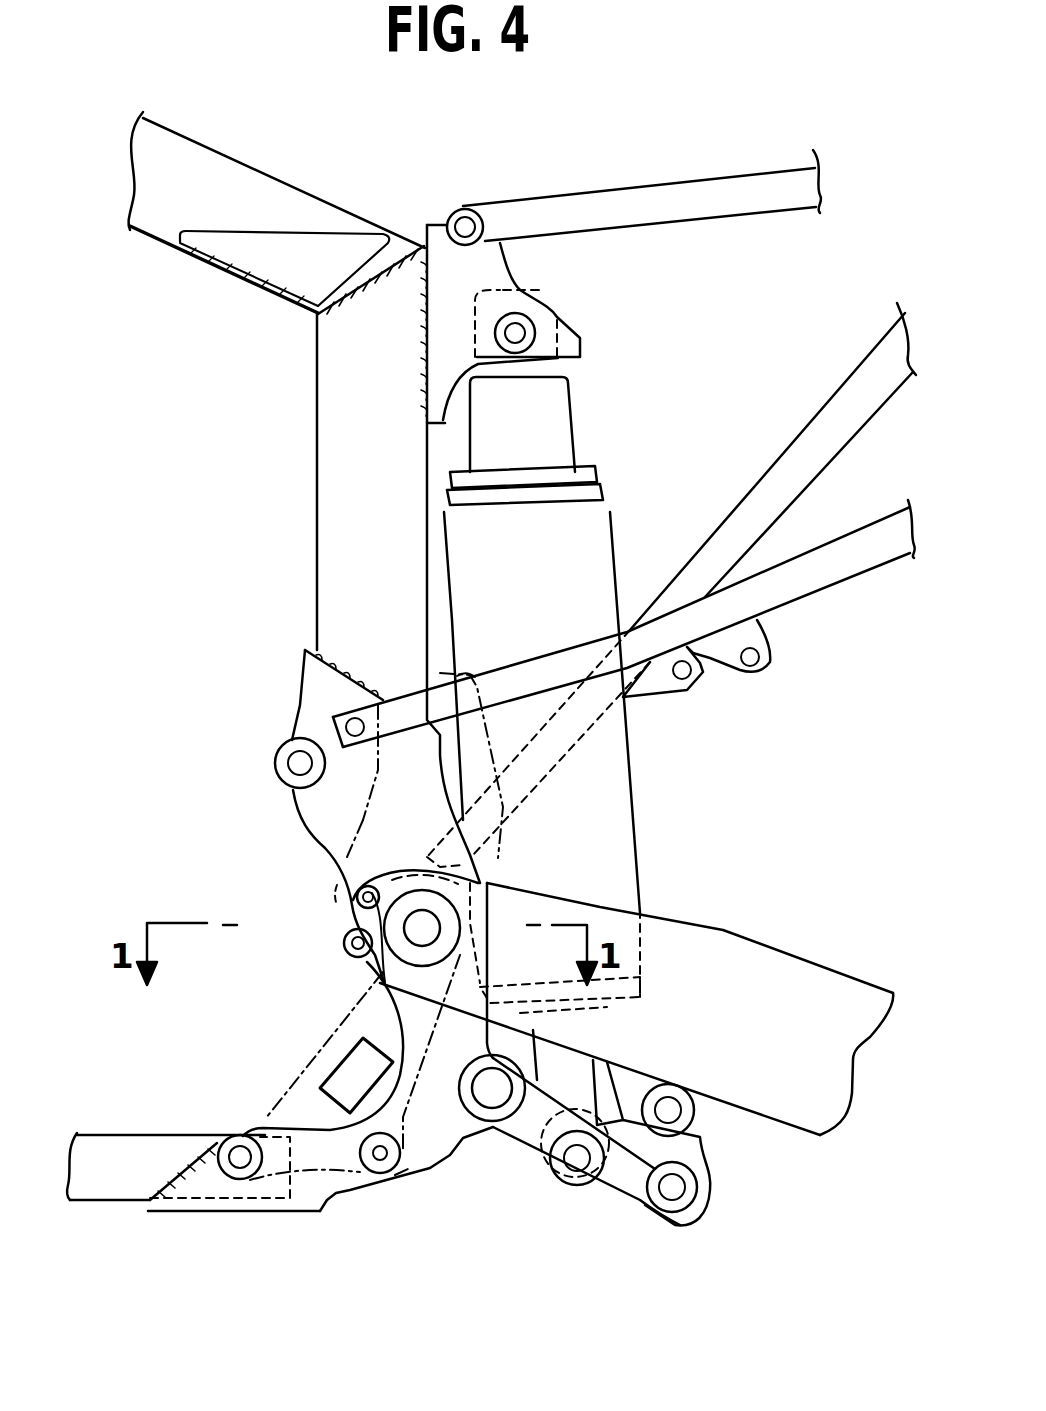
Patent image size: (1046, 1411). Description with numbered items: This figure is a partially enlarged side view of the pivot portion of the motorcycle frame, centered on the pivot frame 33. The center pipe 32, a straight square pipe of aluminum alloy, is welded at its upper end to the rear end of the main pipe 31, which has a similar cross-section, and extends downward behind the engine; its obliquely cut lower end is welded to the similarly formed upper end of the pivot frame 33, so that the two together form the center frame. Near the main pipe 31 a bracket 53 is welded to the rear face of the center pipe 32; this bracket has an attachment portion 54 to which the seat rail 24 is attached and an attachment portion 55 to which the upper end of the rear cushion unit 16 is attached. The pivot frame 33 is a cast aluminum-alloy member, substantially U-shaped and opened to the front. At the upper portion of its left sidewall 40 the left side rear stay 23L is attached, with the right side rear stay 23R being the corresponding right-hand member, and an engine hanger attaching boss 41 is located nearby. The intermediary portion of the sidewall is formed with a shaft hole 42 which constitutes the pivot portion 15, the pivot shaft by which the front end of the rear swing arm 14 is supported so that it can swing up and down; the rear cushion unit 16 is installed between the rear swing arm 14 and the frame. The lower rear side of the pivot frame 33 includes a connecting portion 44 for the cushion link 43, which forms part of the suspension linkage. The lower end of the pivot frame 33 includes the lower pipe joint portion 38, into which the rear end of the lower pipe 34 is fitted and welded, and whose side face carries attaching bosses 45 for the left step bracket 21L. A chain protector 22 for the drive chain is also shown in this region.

The rear swing arm 14 is at (780, 960).
The pivot shaft 15 is at (420, 950).
The rear cushion unit 16 is at (607, 533).
The left step bracket 21L is at (283, 1105).
The chain protector 22 is at (493, 855).
The left side rear stay 23L is at (527, 670).
The right side rear stay 23R is at (807, 440).
The seat rail 24 is at (682, 188).
The main pipe 31 is at (131, 228).
The center pipe 32 is at (317, 508).
The pivot frame 33 is at (427, 1170).
The lower pipe 34 is at (100, 1190).
The lower pipe joint portion 38 is at (205, 1197).
The left sidewall 40 is at (310, 688).
The engine hanger attaching boss 41 is at (300, 763).
The shaft hole 42 is at (410, 933).
The cushion link 43 is at (533, 1140).
The connecting portion 44 is at (470, 1123).
The attaching boss 45 is at (240, 1140).
The bracket 53 is at (483, 277).
The attachment portion 54 is at (447, 212).
The attachment portion 55 is at (533, 320).